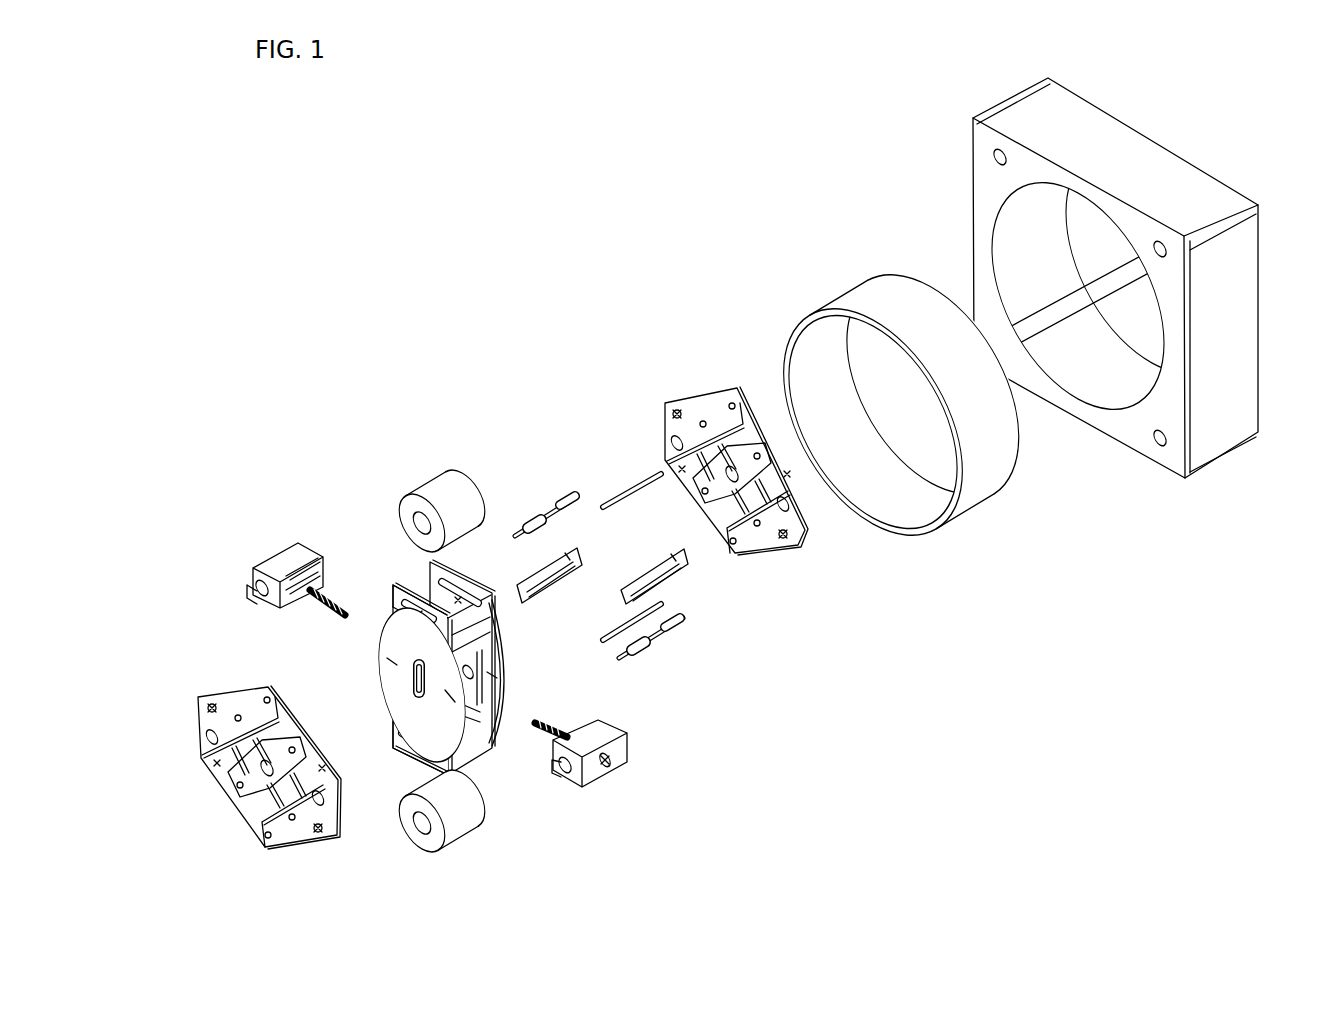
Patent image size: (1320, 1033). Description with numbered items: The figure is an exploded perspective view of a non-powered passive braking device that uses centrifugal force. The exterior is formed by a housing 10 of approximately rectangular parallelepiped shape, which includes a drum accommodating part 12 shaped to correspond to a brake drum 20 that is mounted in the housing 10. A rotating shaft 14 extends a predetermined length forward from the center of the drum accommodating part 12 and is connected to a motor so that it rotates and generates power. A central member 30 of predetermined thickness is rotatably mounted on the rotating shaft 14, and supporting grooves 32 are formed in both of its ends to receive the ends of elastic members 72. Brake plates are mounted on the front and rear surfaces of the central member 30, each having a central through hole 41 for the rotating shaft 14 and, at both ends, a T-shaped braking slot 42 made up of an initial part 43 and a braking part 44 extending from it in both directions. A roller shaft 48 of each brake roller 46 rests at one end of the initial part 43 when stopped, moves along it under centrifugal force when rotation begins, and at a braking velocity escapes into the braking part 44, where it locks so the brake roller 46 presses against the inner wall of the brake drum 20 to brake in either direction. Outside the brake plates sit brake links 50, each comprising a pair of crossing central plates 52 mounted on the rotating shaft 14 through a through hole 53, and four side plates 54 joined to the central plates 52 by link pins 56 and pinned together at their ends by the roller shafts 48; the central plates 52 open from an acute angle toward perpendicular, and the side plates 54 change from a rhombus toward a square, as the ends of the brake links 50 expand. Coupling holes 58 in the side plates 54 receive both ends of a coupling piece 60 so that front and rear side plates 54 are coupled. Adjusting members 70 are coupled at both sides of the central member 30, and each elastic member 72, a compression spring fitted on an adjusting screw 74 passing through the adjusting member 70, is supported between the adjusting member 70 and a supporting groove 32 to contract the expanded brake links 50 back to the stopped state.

The housing 10 is at (1213, 440).
The drum accommodating part 12 is at (1025, 220).
The rotating shaft 14 is at (1045, 327).
The brake drum 20 is at (985, 478).
The central member 30 is at (496, 735).
The supporting groove 32 is at (500, 670).
The through hole 41 is at (413, 677).
The braking slot 42 is at (347, 510).
The initial part 43 is at (414, 585).
The braking part 44 is at (394, 598).
The brake roller 46 is at (447, 481).
The roller shaft 48 is at (618, 500).
The brake link 50 is at (265, 790).
The central plate 52 is at (250, 790).
The through hole 53 is at (260, 775).
The side plate 54 is at (202, 752).
The link pin 56 is at (238, 718).
The coupling hole 58 is at (212, 705).
The coupling piece 60 is at (560, 578).
The adjusting member 70 is at (278, 563).
The elastic member 72 is at (318, 603).
The adjusting screw 74 is at (613, 767).